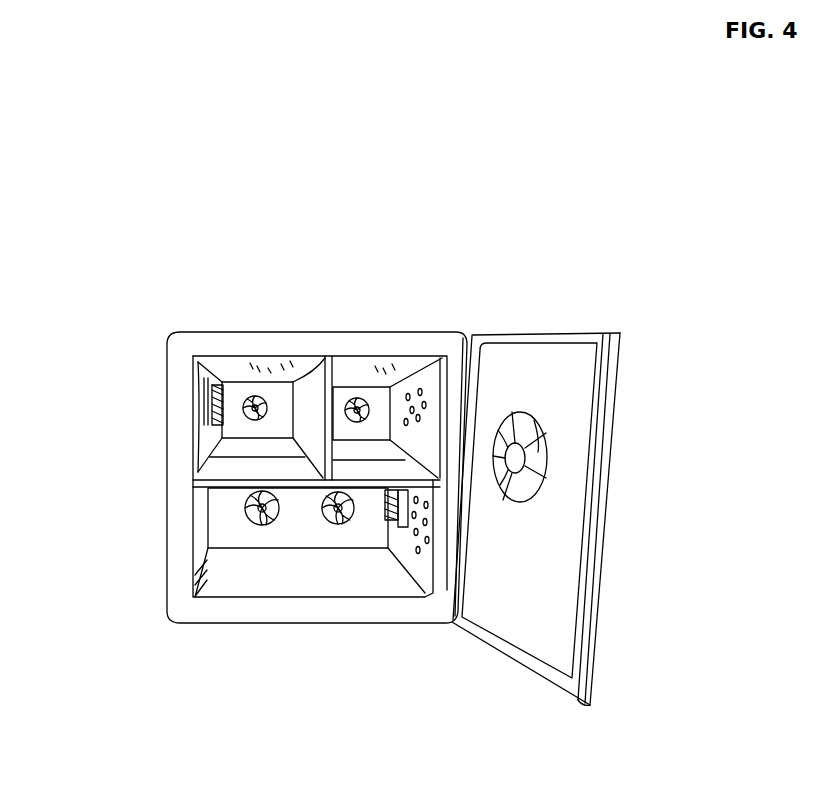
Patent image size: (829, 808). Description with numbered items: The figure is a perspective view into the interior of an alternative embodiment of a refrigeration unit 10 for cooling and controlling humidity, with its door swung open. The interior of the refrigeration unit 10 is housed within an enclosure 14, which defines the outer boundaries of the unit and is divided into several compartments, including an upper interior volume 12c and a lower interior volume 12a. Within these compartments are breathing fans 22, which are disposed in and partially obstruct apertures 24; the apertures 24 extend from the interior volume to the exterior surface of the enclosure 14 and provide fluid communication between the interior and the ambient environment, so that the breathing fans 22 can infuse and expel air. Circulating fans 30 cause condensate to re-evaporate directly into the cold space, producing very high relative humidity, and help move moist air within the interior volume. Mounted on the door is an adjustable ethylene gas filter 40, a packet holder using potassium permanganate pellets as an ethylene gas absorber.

The refrigeration unit 10 is at (137, 455).
The enclosure 14 is at (292, 330).
The circulating fans 30 is at (197, 360).
The breathing fans 22 is at (260, 518).
The apertures 24 is at (264, 518).
The interior volume 12c is at (405, 370).
The interior volume 12a is at (207, 540).
The adjustable ethylene gas filter 40 is at (540, 427).